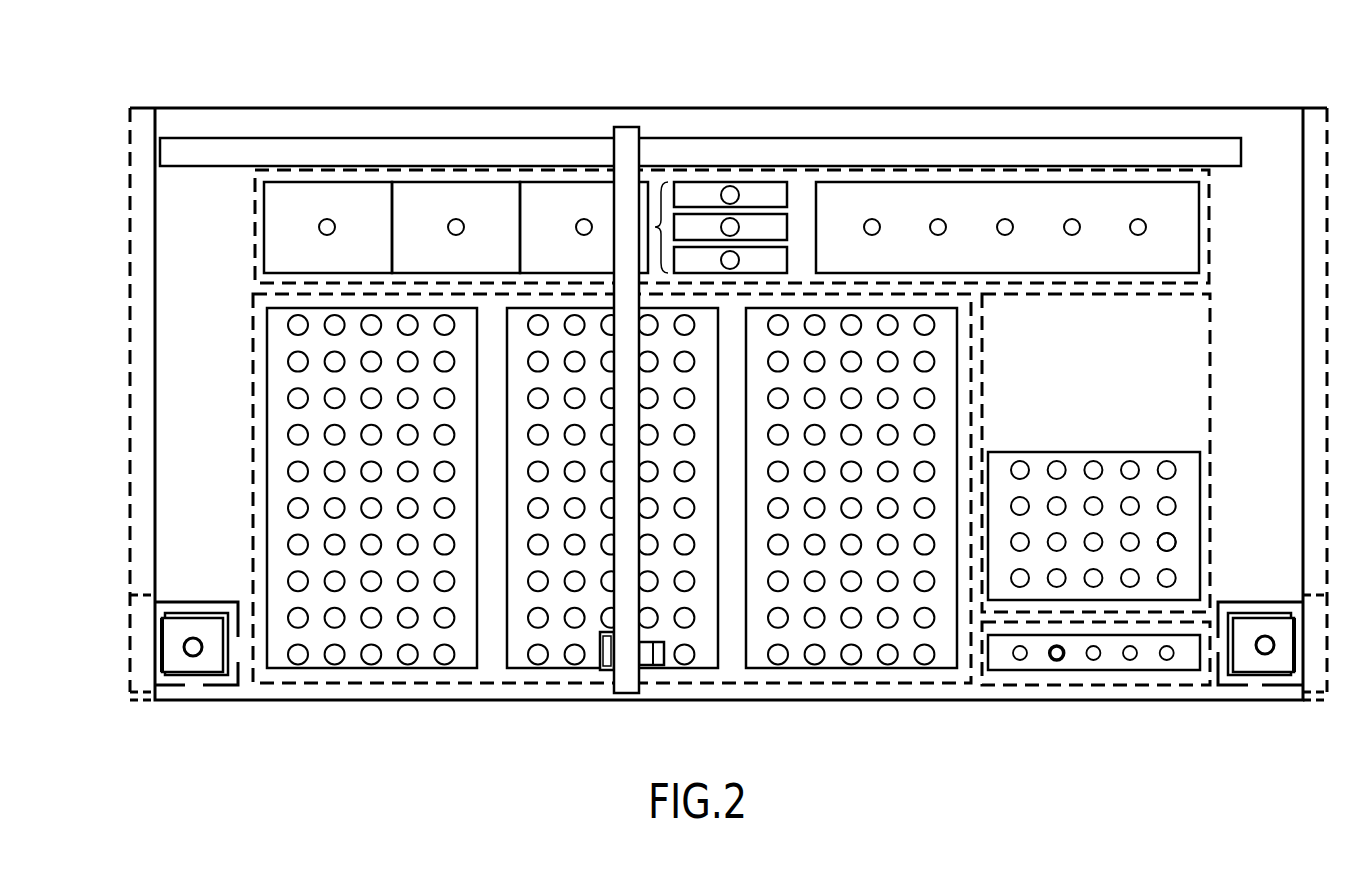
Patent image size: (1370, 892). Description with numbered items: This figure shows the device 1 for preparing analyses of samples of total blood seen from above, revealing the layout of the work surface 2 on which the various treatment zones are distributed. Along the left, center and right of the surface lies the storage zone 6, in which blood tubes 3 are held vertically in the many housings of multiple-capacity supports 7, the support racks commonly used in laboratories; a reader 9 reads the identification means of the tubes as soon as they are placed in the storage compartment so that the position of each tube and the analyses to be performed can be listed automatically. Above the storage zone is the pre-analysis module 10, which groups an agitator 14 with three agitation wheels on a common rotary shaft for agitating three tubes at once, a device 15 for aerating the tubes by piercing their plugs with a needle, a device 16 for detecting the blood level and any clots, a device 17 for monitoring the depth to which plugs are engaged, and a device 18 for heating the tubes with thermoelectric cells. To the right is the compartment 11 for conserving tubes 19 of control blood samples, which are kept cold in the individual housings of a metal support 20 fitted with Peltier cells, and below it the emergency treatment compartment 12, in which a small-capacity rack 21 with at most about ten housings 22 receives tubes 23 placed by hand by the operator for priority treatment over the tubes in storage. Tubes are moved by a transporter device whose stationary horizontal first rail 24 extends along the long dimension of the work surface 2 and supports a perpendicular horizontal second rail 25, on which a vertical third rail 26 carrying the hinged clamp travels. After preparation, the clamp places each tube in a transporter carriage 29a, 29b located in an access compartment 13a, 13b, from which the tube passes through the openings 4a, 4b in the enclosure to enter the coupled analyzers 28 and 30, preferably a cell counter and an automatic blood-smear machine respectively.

The device 1 is at (845, 86).
The work surface 2 is at (1265, 130).
The tube 3 is at (197, 653).
The opening 4a is at (1325, 645).
The opening 4b is at (128, 645).
The storage zone 6 is at (718, 685).
The multiple-capacity support 7 is at (360, 670).
The reader 9 is at (598, 672).
The pre-analysis module 10 is at (1212, 222).
The compartment 11 is at (1212, 400).
The emergency treatment compartment 12 is at (1158, 686).
The access compartment 13a is at (1253, 690).
The access compartment 13b is at (188, 690).
The agitator 14 is at (655, 227).
The aerating device 15 is at (275, 209).
The detecting device 16 is at (403, 209).
The plug depth monitoring device 17 is at (531, 209).
The heating device 18 is at (829, 209).
The control sample tube 19 is at (1170, 540).
The metal support 20 is at (1185, 483).
The small-capacity rack 21 is at (1110, 662).
The housing 22 is at (1020, 660).
The tube 23 is at (1057, 660).
The first rail 24 is at (1098, 150).
The second rail 25 is at (627, 133).
The third rail 26 is at (650, 656).
The analyzer 28 is at (143, 118).
The transporter carriage 29a is at (1262, 628).
The transporter carriage 29b is at (196, 626).
The analyzer 30 is at (1316, 122).